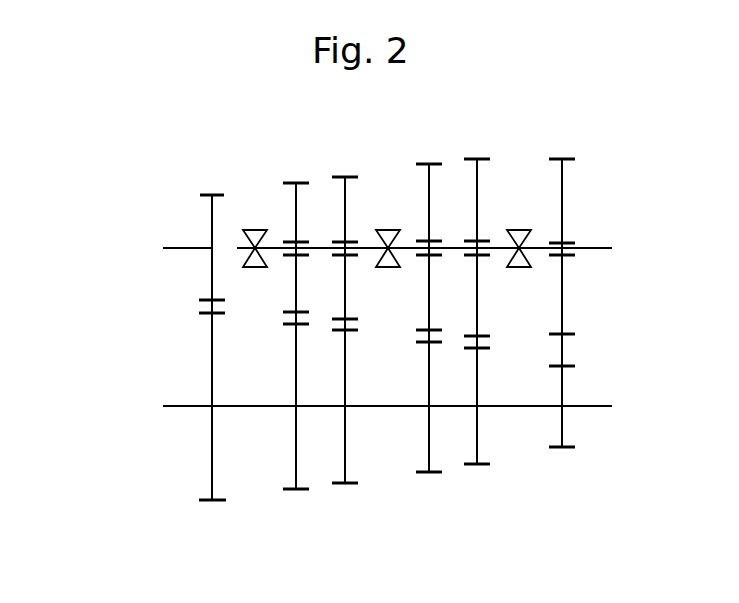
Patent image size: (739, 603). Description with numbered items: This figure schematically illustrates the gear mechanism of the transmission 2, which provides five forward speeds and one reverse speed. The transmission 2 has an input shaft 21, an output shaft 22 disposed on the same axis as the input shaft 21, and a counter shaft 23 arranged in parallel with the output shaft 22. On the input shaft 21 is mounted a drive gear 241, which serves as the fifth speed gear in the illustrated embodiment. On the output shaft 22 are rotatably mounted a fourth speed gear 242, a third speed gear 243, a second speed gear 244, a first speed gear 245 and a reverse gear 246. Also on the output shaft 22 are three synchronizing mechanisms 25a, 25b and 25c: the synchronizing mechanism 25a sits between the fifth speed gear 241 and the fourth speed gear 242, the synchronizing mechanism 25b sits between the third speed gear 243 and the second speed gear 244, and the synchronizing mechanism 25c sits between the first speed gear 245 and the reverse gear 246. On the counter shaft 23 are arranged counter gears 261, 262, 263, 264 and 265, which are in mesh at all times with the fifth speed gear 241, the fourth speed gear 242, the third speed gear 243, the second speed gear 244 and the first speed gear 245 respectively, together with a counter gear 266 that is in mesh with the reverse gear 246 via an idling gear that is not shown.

The transmission 2 is at (134, 322).
The input shaft 21 is at (183, 248).
The output shaft 22 is at (598, 248).
The counter shaft 23 is at (183, 406).
The drive gear 241 is at (207, 195).
The fourth speed gear 242 is at (289, 182).
The third speed gear 243 is at (352, 176).
The second speed gear 244 is at (423, 163).
The first speed gear 245 is at (475, 158).
The reverse gear 246 is at (565, 158).
The synchronizing mechanism 25a is at (255, 229).
The synchronizing mechanism 25b is at (387, 229).
The synchronizing mechanism 25c is at (522, 229).
The counter gear 261 is at (203, 502).
The counter gear 262 is at (287, 491).
The counter gear 263 is at (350, 485).
The counter gear 264 is at (435, 474).
The counter gear 265 is at (484, 466).
The counter gear 266 is at (569, 449).